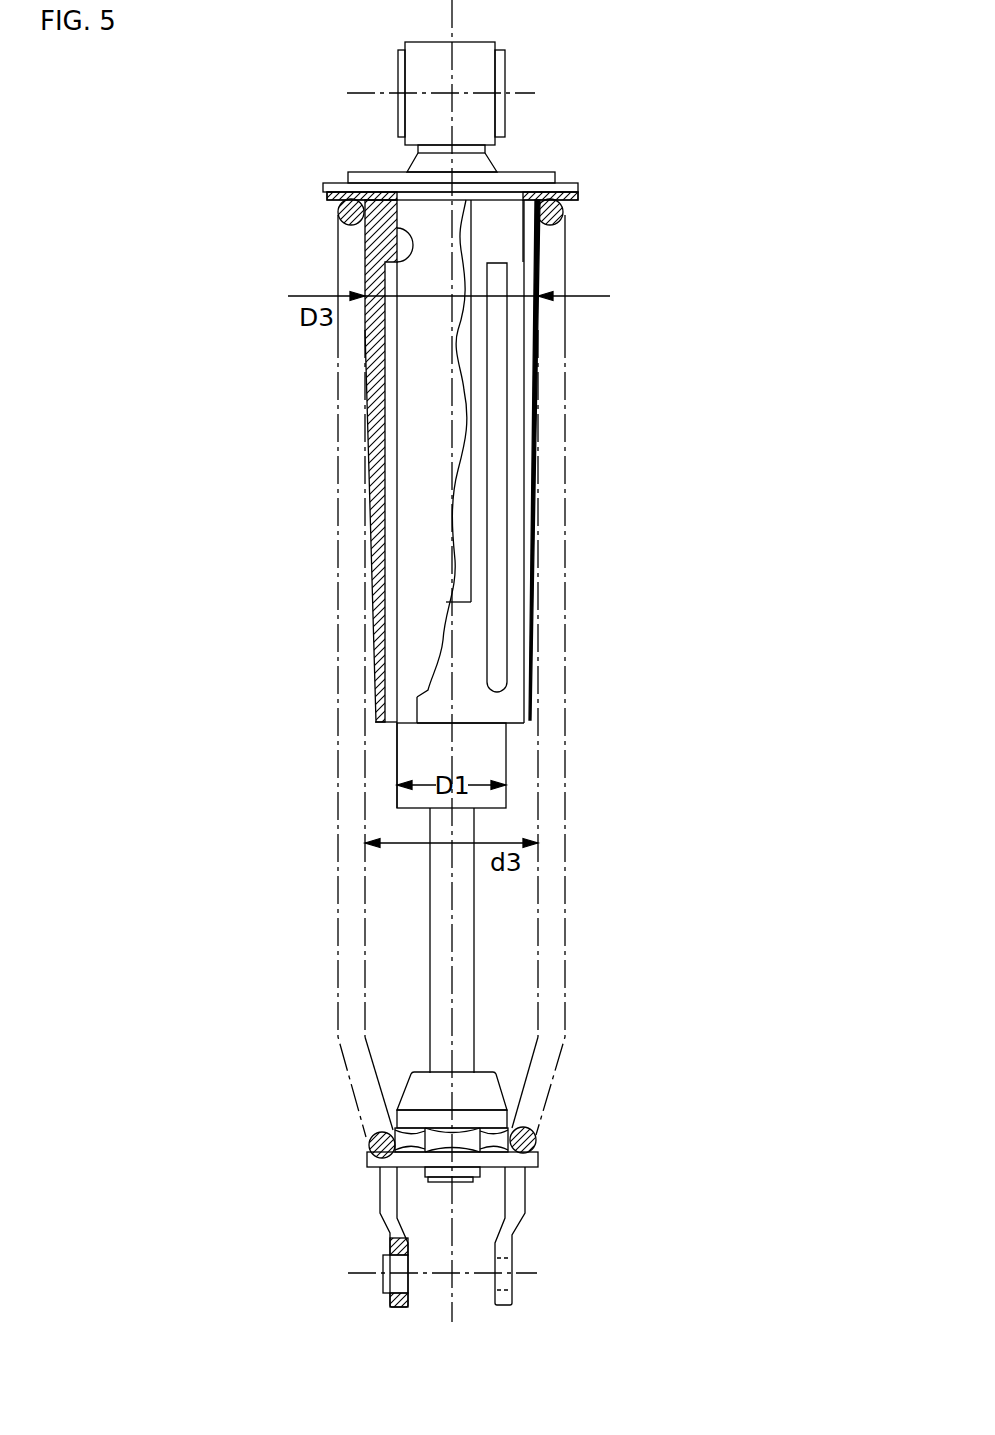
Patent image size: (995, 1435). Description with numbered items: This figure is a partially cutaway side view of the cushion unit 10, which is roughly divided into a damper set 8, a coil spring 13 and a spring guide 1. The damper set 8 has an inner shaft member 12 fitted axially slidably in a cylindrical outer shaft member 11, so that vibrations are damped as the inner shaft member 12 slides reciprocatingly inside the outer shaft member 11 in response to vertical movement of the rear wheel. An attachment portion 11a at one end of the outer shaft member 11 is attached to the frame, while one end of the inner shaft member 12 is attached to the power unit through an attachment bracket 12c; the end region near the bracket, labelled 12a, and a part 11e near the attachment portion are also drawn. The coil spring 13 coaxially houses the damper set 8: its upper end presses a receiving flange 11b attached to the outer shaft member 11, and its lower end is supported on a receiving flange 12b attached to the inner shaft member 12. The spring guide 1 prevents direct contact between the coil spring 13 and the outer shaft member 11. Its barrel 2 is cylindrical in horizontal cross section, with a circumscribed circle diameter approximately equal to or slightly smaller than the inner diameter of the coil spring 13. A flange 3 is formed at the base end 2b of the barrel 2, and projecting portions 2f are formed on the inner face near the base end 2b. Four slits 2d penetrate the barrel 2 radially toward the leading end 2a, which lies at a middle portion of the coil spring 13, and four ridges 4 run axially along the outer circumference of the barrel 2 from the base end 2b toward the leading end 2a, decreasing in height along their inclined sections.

The spring guide 1 is at (525, 512).
The barrel 2 is at (520, 466).
The leading end 2a is at (480, 725).
The base end 2b is at (515, 200).
The slit 2d is at (497, 382).
The projecting portion 2f is at (393, 250).
The flange 3 is at (578, 197).
The ridge 4 is at (367, 332).
The damper set 8 is at (590, 636).
The cushion unit 10 is at (635, 817).
The outer shaft member 11 is at (495, 760).
The attachment portion 11a is at (477, 70).
The receiving flange 11b is at (338, 181).
The rod boss 11e is at (418, 162).
The inner shaft member 12 is at (475, 980).
The lower rod head 12a is at (480, 1100).
The receiving flange 12b is at (538, 1160).
The attachment bracket 12c is at (528, 1242).
The coil spring 13 is at (340, 219).